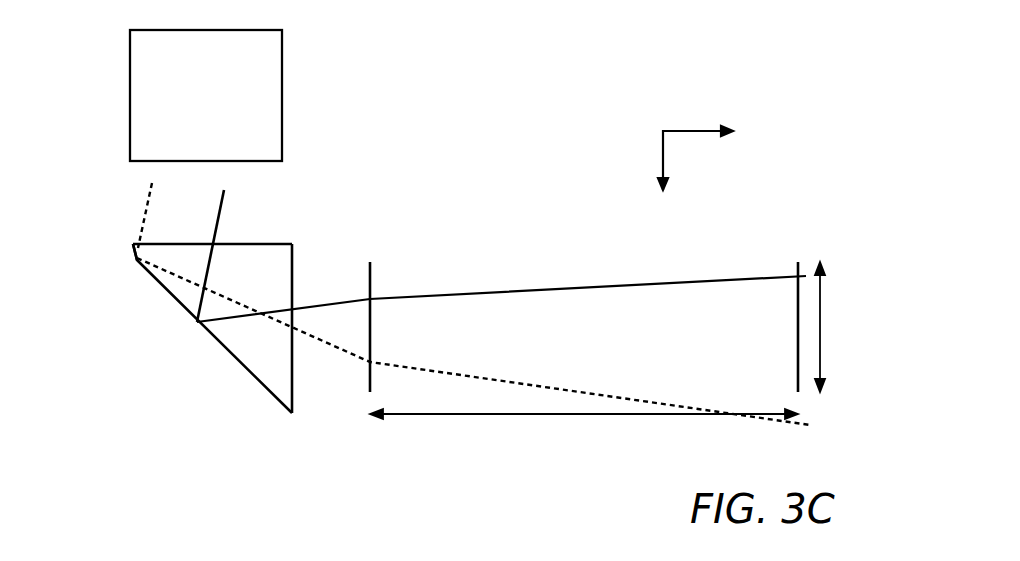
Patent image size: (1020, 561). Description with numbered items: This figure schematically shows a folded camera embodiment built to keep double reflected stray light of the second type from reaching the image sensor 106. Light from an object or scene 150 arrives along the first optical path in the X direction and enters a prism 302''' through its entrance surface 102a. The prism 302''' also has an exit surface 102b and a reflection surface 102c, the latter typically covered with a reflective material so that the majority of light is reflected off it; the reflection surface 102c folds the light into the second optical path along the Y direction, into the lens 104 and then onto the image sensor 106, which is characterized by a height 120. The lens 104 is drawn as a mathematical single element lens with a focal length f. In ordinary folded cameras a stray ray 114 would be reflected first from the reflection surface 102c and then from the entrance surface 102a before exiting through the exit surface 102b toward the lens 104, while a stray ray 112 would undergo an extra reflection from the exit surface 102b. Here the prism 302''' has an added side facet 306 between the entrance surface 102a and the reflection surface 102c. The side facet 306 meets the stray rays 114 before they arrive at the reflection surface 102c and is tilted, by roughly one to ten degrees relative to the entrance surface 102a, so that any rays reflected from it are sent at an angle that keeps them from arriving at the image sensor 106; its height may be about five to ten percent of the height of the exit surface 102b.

The object or scene 150 is at (182, 141).
The entrance surface 102a is at (267, 244).
The exit surface 102b is at (293, 262).
The reflection surface 102c is at (244, 378).
The side facet 306 is at (131, 252).
The prism 302''' is at (413, 341).
The stray ray 112 is at (222, 200).
The stray ray 114 is at (147, 192).
The lens 104 is at (370, 383).
The image sensor 106 is at (798, 262).
The height 120 is at (822, 315).